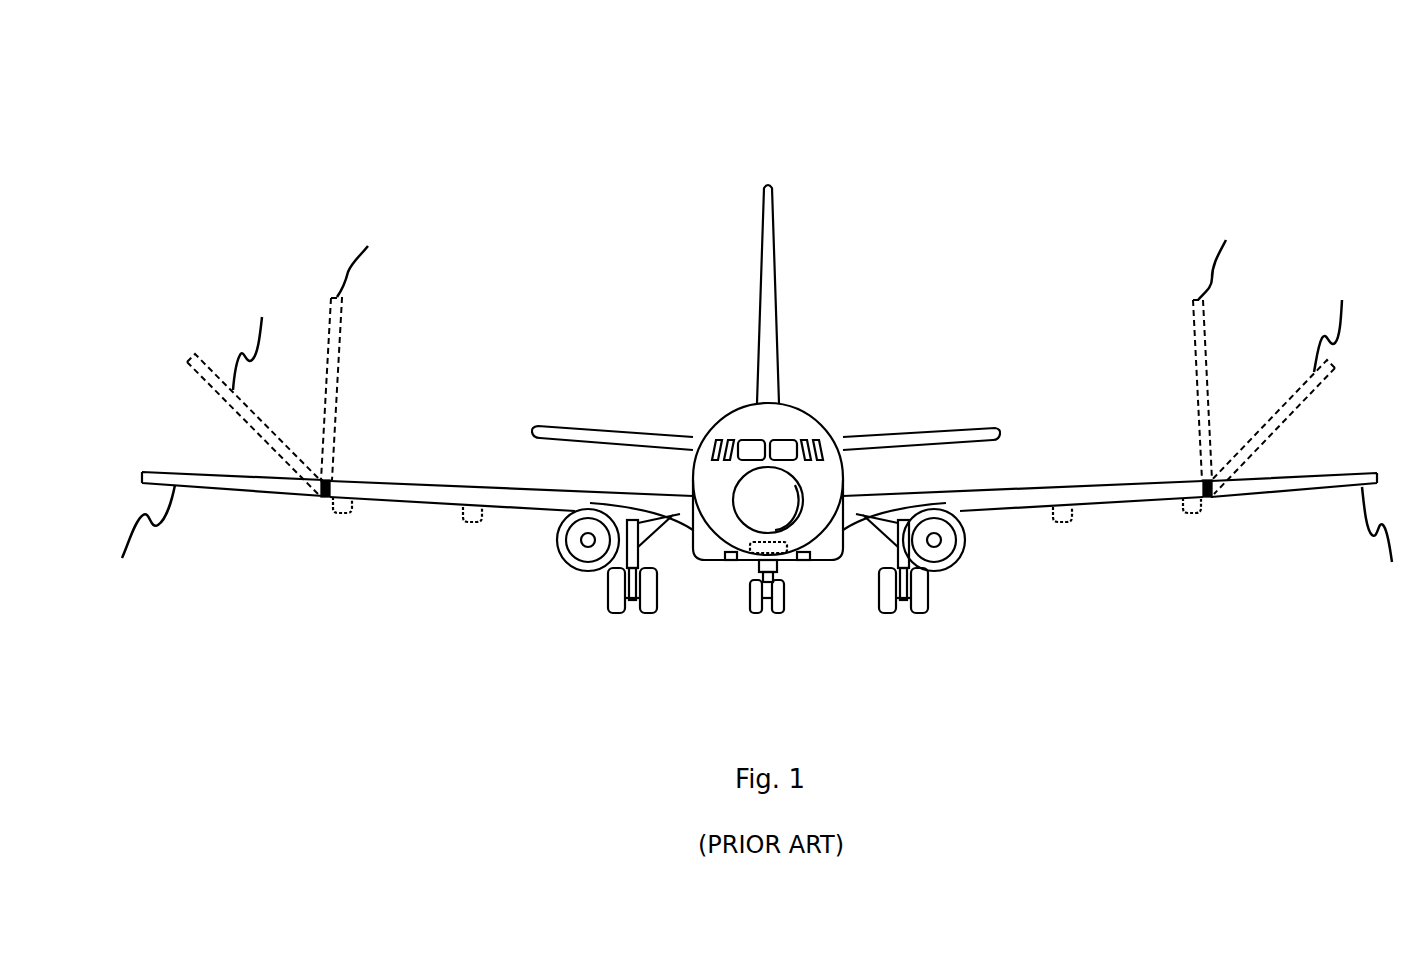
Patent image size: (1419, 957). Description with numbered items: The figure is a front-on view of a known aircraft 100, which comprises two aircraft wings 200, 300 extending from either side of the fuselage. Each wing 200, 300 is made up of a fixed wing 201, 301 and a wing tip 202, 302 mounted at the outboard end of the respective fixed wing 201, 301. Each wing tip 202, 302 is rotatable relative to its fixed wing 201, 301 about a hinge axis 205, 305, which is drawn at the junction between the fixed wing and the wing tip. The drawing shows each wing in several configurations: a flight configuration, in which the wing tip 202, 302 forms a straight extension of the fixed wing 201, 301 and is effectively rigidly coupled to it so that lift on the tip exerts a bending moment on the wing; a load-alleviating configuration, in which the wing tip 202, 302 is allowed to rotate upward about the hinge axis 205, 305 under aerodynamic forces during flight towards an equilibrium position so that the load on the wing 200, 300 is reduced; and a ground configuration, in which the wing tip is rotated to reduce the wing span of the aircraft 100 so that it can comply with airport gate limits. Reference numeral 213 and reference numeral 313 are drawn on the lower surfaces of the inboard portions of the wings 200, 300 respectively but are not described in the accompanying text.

The aircraft 100 is at (505, 165).
The aircraft wing 200 is at (1043, 488).
The fixed wing 201 is at (1102, 498).
The wing tip 202 is at (1292, 488).
The hinge axis 205 is at (1207, 497).
The right wing lower surface 213 is at (1143, 503).
The aircraft wing 300 is at (463, 482).
The fixed wing 301 is at (438, 492).
The wing tip 302 is at (280, 485).
The hinge axis 305 is at (321, 497).
The left wing lower surface 313 is at (523, 508).